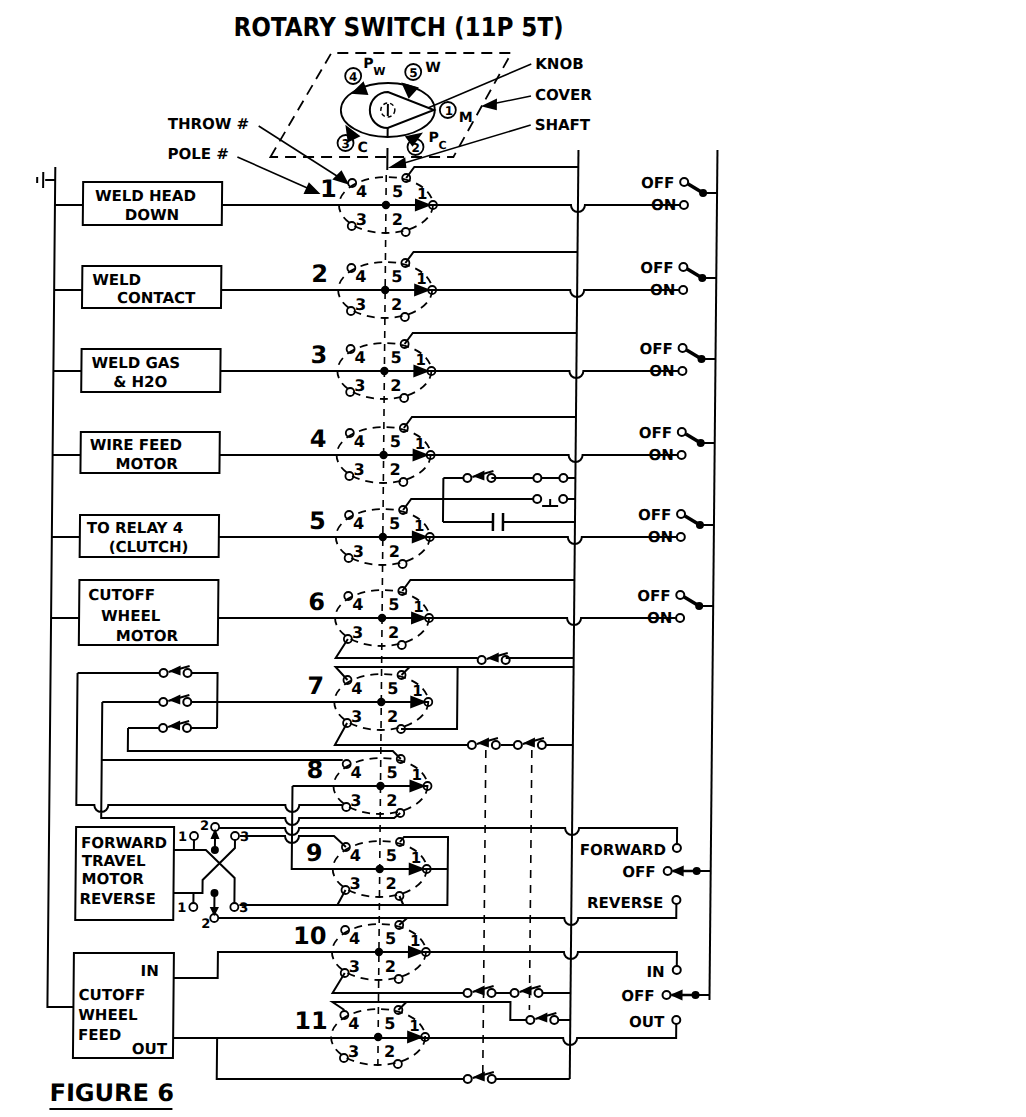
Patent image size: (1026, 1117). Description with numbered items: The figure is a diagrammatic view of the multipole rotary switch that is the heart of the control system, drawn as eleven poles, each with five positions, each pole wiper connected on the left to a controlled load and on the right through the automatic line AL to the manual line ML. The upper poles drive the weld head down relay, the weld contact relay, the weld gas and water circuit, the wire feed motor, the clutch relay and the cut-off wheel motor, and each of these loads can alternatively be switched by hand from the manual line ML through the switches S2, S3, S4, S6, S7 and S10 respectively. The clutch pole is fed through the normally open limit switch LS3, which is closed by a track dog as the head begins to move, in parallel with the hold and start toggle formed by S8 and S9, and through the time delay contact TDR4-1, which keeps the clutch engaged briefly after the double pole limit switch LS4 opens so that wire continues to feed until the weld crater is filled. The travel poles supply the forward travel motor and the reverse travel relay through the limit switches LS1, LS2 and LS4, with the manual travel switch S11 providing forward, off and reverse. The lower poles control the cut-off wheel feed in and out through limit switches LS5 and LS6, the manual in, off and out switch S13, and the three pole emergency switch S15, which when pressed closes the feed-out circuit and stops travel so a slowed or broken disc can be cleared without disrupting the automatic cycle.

The automatic line AL is at (581, 216).
The manual line ML is at (721, 214).
The head position switch S2 is at (713, 190).
The contactor switch S3 is at (712, 275).
The purge gas and water switch S4 is at (711, 356).
The wire feed motor switch S6 is at (711, 440).
The wire feed clutch switch S7 is at (710, 522).
The hold switch S8 is at (550, 470).
The start switch S9 is at (550, 493).
The cutting motor switch S10 is at (715, 603).
The travel switch S11 is at (708, 872).
The feed-in and feed-out switch S13 is at (706, 996).
The emergency switch S15 is at (482, 903).
The limit switch LS1 is at (168, 693).
The limit switch LS2 is at (335, 658).
The limit switch LS3 is at (478, 470).
The limit switch LS4 is at (168, 720).
The limit switch LS5 is at (535, 874).
The limit switch LS6 is at (542, 1011).
The time delay relay contact TDR4-1 is at (490, 517).